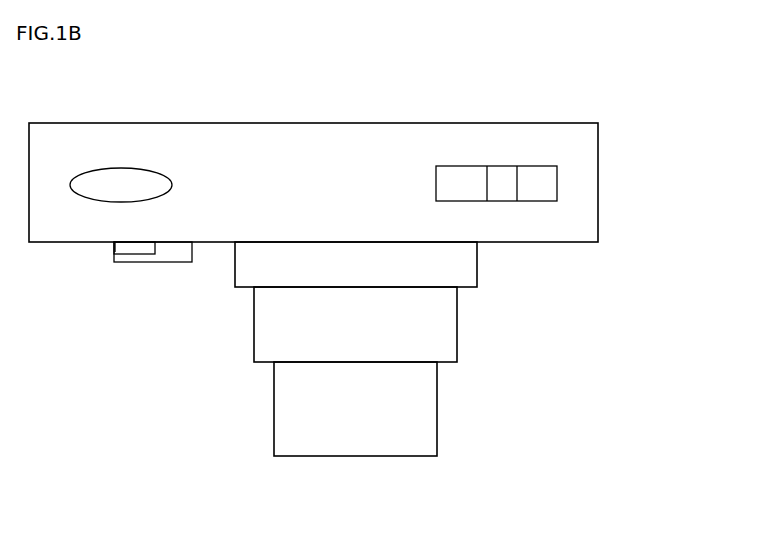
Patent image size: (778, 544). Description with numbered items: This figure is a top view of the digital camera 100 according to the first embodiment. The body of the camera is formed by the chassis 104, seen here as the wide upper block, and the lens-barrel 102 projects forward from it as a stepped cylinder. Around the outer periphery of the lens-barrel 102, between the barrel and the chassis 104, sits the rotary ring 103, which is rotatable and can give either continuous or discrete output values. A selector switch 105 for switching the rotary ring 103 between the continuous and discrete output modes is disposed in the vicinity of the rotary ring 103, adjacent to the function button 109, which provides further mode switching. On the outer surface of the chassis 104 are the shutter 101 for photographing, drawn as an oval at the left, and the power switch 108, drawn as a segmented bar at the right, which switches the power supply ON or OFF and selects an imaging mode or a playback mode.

The digital camera 100 is at (605, 261).
The shutter 101 is at (125, 168).
The lens-barrel 102 is at (407, 343).
The rotary ring 103 is at (473, 269).
The chassis 104 is at (590, 185).
The selector switch 105 is at (170, 255).
The power switch 108 is at (493, 179).
The function button 109 is at (118, 247).